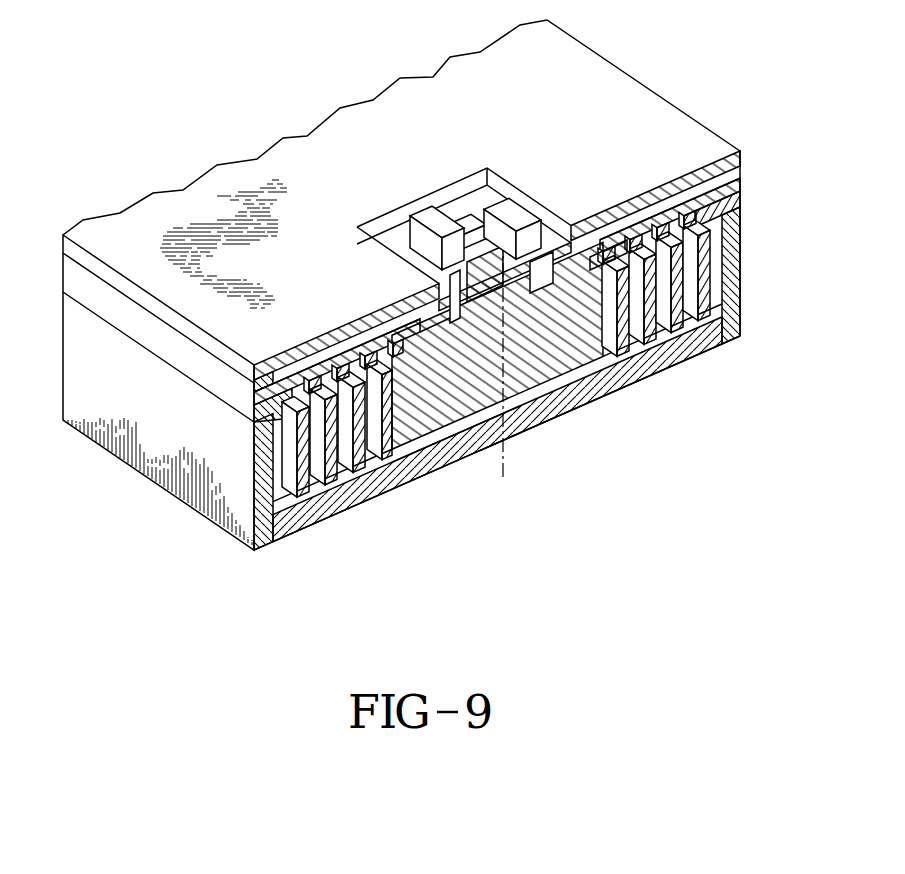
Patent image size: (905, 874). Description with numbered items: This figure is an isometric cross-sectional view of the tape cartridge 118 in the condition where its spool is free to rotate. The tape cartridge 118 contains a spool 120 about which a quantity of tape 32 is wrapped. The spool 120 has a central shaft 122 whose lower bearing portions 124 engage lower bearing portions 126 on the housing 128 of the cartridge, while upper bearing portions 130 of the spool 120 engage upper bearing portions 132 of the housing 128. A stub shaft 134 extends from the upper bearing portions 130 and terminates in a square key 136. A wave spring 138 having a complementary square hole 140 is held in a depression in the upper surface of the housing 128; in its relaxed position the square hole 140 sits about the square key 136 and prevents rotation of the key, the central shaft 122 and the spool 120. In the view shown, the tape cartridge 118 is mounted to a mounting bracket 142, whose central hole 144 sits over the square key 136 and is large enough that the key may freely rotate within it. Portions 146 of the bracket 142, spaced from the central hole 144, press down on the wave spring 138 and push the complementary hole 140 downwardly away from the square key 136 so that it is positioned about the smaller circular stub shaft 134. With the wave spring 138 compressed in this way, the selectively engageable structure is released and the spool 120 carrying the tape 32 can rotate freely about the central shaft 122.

The tape cartridge 118 is at (740, 282).
The housing 128 is at (320, 525).
The lower bearing portions 124 is at (530, 410).
The upper bearing portions 130 is at (470, 365).
The upper bearing portions 132 is at (445, 355).
The lower bearing portions 126 is at (505, 428).
The spool 120 is at (515, 450).
The tape 32 is at (650, 336).
The wave spring 138 is at (337, 363).
The portions of the bracket 146 is at (425, 300).
The mounting bracket 142 is at (665, 125).
The central hole 144 is at (372, 222).
The central shaft 122 is at (553, 293).
The square key 136 is at (455, 232).
The complementary square hole 140 is at (445, 262).
The stub shaft 134 is at (527, 280).